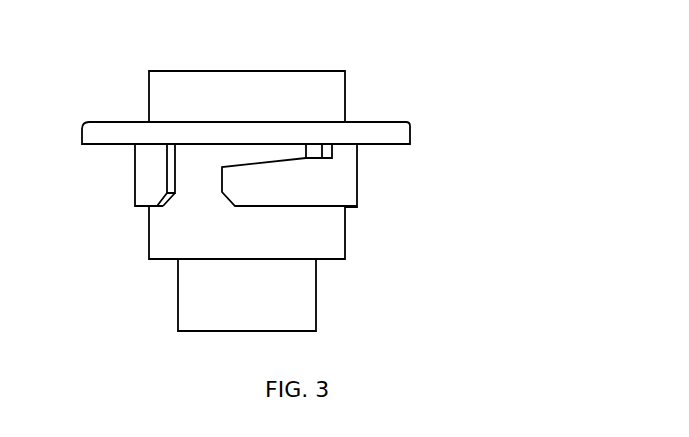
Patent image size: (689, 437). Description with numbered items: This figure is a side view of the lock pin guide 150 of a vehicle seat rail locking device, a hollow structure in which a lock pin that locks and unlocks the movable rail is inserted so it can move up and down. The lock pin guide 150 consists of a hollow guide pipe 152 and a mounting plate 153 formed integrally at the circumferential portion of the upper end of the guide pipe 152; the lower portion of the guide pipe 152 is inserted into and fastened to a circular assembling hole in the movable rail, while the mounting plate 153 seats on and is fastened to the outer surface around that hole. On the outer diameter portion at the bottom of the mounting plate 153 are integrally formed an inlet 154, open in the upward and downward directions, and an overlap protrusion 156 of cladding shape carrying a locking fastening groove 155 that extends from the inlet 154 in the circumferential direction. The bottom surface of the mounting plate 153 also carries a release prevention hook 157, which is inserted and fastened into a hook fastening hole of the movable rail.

The lock pin guide 150 is at (380, 90).
The guide pipe 152 is at (345, 217).
The mounting plate 153 is at (398, 135).
The inlet 154 is at (195, 178).
The locking fastening groove 155 is at (282, 154).
The overlap protrusion 156 is at (330, 228).
The release prevention hook 157 is at (285, 144).